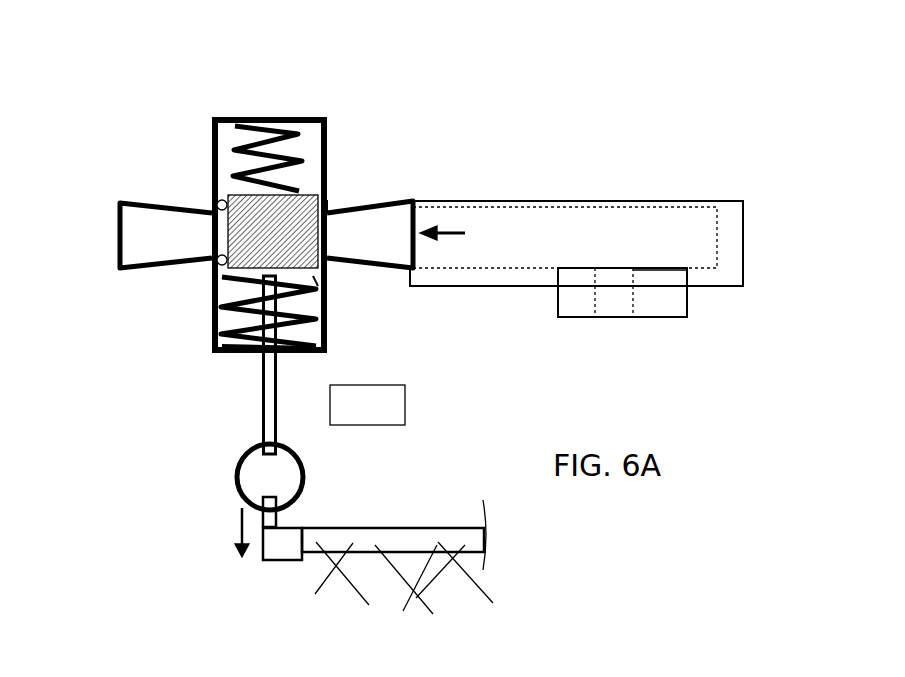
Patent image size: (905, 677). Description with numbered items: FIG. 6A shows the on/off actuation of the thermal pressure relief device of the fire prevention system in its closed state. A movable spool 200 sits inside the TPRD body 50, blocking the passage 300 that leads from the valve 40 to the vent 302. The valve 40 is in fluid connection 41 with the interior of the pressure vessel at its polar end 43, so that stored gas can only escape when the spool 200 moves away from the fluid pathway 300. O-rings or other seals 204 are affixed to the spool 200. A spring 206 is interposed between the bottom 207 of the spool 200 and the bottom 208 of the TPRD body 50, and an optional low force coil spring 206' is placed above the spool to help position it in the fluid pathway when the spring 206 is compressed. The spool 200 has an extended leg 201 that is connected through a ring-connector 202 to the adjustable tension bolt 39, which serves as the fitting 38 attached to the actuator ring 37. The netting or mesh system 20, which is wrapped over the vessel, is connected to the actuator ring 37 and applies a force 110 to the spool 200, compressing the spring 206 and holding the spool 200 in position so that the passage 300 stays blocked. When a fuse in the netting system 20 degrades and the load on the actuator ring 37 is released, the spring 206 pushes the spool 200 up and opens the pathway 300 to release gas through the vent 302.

The netting or mesh system 20 is at (497, 581).
The actuator ring 37 is at (394, 535).
The fitting 38 is at (282, 544).
The adjustable tension bolt 39 is at (270, 517).
The valve 40 is at (743, 210).
The fluid connection 41 is at (622, 292).
The polar end 43 is at (660, 317).
The TPRD body 50 is at (212, 155).
The force 110 is at (238, 546).
The movable spool 200 is at (290, 173).
The extended leg 201 is at (278, 392).
The ring-connector 202 is at (302, 468).
The O-rings or seals 204 is at (328, 200).
The spring 206 is at (205, 322).
The low force coil spring 206' is at (273, 106).
The bottom of the spool 207 is at (313, 276).
The bottom of the TPRD body 208 is at (235, 353).
The passage or fluid pathway 300 is at (401, 234).
The vent 302 is at (166, 235).